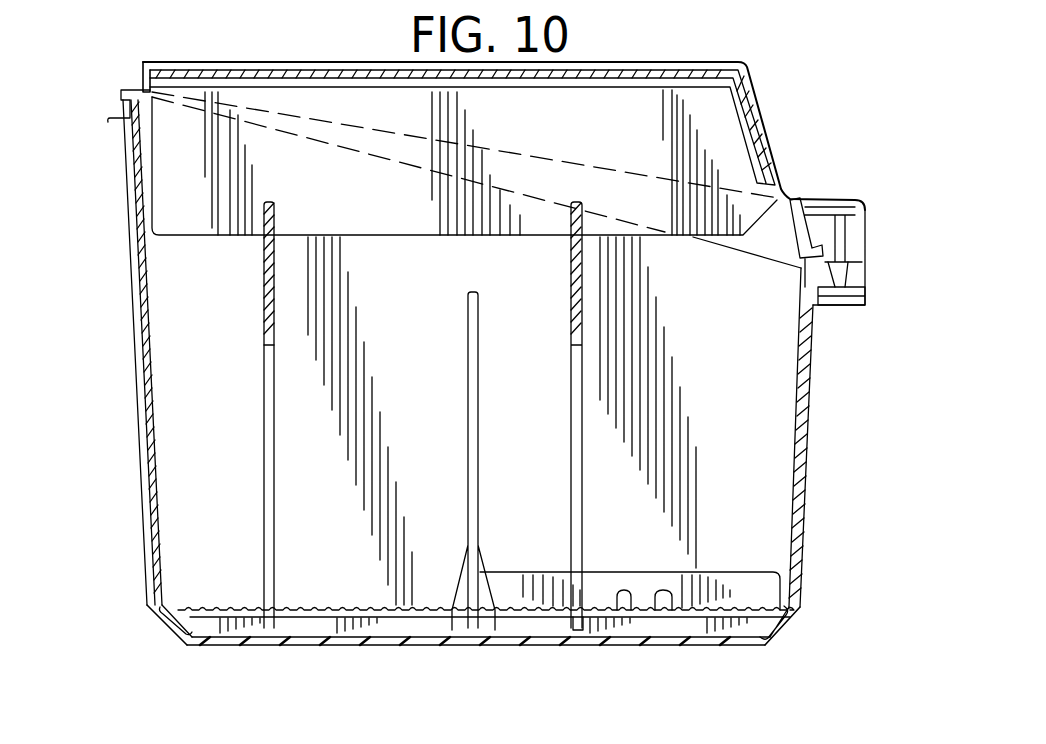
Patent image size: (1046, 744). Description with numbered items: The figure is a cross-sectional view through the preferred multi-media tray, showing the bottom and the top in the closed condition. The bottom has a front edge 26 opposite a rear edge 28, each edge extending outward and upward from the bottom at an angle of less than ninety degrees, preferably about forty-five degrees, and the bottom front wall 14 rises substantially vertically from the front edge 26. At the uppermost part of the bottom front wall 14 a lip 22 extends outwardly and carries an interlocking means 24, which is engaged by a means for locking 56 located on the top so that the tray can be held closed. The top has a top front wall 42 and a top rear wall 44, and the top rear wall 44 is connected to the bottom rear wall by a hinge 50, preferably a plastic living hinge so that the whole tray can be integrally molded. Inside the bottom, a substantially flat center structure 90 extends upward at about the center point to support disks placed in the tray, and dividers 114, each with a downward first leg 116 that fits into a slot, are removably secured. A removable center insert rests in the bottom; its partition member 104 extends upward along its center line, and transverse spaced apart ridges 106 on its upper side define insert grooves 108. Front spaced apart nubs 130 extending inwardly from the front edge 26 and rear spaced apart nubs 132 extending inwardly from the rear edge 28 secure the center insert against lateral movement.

The bottom front wall 14 is at (806, 507).
The lip 22 is at (812, 366).
The interlocking means 24 is at (830, 300).
The front edge 26 is at (792, 620).
The rear edge 28 is at (172, 633).
The top front wall 42 is at (762, 108).
The top rear wall 44 is at (143, 78).
The hinge 50 is at (108, 120).
The means for locking 56 is at (838, 265).
The center structure 90 is at (478, 348).
The partition member 104 is at (728, 577).
The ridges 106 is at (620, 612).
The insert grooves 108 is at (658, 612).
The dividers 114 is at (264, 444).
The first leg 116 is at (142, 448).
The front spaced apart nubs 130 is at (770, 627).
The rear spaced apart nubs 132 is at (172, 610).